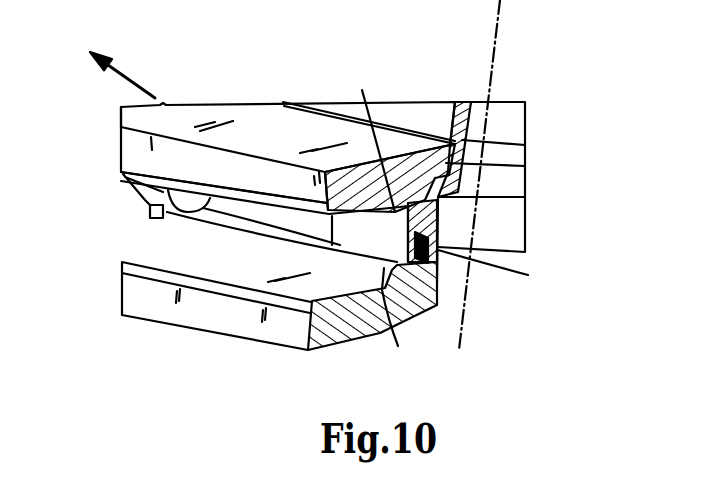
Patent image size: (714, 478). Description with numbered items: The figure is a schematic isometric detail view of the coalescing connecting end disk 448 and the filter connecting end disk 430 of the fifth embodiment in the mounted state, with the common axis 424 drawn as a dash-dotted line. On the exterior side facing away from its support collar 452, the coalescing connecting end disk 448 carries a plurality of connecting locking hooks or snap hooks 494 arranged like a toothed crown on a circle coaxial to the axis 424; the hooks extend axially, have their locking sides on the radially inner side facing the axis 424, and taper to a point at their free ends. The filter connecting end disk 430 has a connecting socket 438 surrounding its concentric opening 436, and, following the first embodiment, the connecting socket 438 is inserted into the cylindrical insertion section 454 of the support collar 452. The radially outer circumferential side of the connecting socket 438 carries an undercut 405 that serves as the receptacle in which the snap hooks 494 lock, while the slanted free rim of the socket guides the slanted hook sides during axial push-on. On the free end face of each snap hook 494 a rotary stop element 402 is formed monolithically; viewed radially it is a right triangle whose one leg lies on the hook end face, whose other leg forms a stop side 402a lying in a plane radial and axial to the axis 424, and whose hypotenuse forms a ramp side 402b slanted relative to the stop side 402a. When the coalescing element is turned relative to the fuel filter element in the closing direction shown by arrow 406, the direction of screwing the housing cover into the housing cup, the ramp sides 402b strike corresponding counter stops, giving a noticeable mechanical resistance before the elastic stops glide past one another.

The rotary stop element 402 is at (145, 228).
The stop side 402a is at (165, 213).
The ramp side 402b is at (147, 208).
The undercut 405 is at (430, 272).
The arrow 406 is at (137, 82).
The axis 424 is at (497, 43).
The filter connecting end disk 430 is at (152, 315).
The ring element 436 is at (503, 257).
The connecting socket 438 is at (440, 250).
The coalescing connecting end disk 448 is at (148, 150).
The support collar 452 is at (433, 114).
The cylinder / sleeve 454 is at (500, 137).
The snap hooks 494 is at (147, 193).